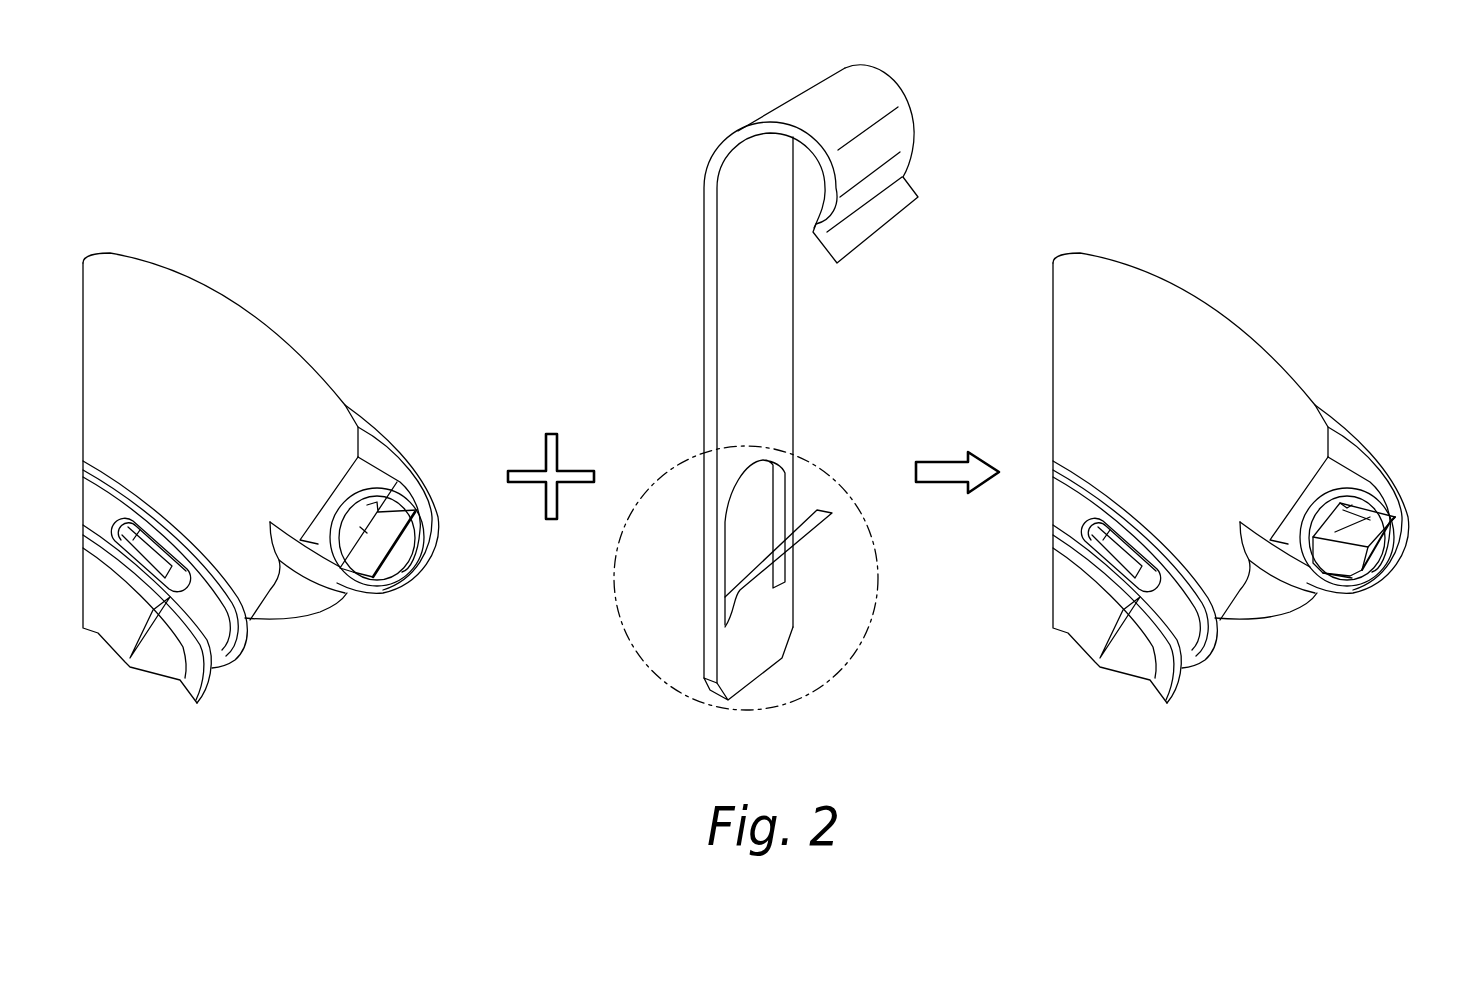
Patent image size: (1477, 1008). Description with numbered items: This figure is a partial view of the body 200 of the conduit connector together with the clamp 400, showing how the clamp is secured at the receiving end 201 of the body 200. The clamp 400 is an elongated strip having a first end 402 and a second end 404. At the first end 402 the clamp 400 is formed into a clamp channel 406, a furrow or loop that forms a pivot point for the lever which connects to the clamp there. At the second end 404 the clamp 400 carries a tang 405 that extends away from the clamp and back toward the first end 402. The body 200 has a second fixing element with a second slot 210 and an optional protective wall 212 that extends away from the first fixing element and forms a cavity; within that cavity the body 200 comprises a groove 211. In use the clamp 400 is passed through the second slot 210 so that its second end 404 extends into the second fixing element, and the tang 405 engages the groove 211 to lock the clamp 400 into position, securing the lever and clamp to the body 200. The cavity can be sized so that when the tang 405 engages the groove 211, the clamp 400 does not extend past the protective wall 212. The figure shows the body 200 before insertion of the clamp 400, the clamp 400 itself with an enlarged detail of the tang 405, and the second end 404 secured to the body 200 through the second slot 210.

The body 200 is at (155, 342).
The receiving end 201 is at (272, 326).
The second slot 210 is at (405, 590).
The groove 211 is at (363, 523).
The protective wall 212 is at (362, 603).
The clamp 400 is at (740, 265).
The first end 402 is at (1368, 547).
The second end 404 is at (663, 683).
The tang 405 is at (797, 542).
The clamp channel 406 is at (900, 140).